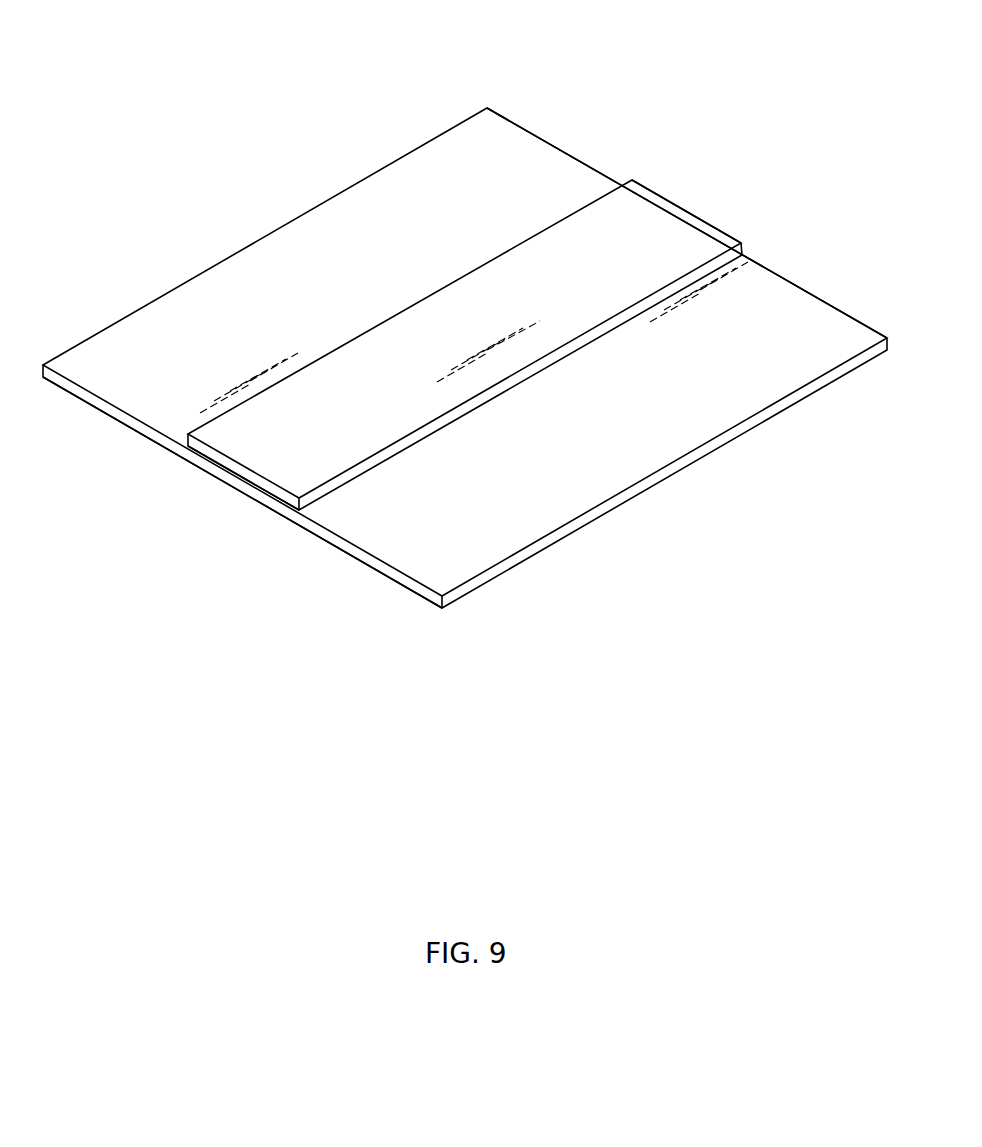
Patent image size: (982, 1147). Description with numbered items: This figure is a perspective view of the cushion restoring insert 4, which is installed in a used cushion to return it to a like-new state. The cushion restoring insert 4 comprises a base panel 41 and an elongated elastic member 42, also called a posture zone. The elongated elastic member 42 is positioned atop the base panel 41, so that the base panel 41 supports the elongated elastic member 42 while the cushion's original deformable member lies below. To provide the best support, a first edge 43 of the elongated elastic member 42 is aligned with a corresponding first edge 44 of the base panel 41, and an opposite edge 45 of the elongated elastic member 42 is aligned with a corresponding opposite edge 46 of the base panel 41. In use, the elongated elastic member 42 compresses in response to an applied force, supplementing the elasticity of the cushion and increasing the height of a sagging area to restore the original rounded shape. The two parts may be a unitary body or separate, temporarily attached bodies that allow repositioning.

The cushion restoring insert 4 is at (236, 160).
The base panel 41 is at (462, 138).
The elongated elastic member 42 is at (713, 240).
The first edge of the elongated elastic member 43 is at (275, 487).
The first edge of the base panel 44 is at (148, 425).
The opposite edge of the elongated elastic member 45 is at (646, 183).
The opposite edge of the base panel 46 is at (560, 147).